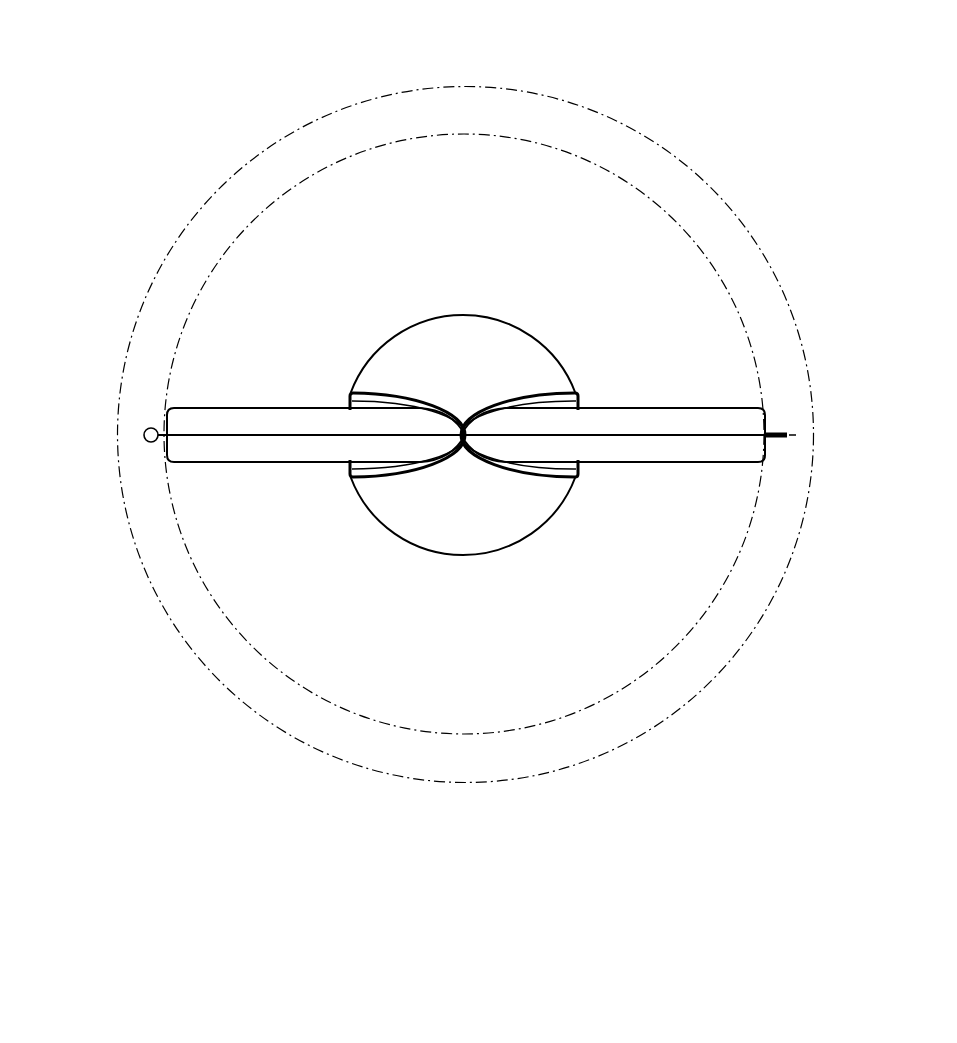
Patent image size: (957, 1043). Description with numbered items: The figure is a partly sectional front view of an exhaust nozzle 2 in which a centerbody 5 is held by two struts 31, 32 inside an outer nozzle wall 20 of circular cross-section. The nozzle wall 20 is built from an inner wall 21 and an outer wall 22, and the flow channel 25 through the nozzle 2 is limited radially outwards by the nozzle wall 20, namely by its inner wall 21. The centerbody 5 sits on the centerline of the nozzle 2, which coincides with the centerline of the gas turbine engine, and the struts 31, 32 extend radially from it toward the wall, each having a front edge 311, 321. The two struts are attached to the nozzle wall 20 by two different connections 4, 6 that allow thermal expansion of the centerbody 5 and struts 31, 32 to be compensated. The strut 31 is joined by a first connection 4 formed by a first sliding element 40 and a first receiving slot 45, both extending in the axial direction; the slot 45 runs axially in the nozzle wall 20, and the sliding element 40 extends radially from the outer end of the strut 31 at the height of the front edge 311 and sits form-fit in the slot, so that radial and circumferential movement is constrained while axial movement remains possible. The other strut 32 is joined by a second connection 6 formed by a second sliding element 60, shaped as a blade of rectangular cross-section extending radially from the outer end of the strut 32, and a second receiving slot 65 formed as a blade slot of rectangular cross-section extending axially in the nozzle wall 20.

The nozzle 2 is at (328, 80).
The outer nozzle wall 20 is at (705, 195).
The inner wall 21 is at (615, 173).
The outer wall 22 is at (614, 118).
The flow channel 25 is at (446, 222).
The centerbody 5 is at (460, 557).
The first connection 4 is at (140, 409).
The strut 31 is at (222, 463).
The front edge 311 is at (287, 437).
The first receiving slot 45 is at (142, 435).
The first sliding element 40 is at (154, 447).
The second connection 6 is at (792, 409).
The strut 32 is at (687, 463).
The front edge 321 is at (610, 437).
The second sliding element 60 is at (773, 438).
The second receiving slot 65 is at (793, 433).